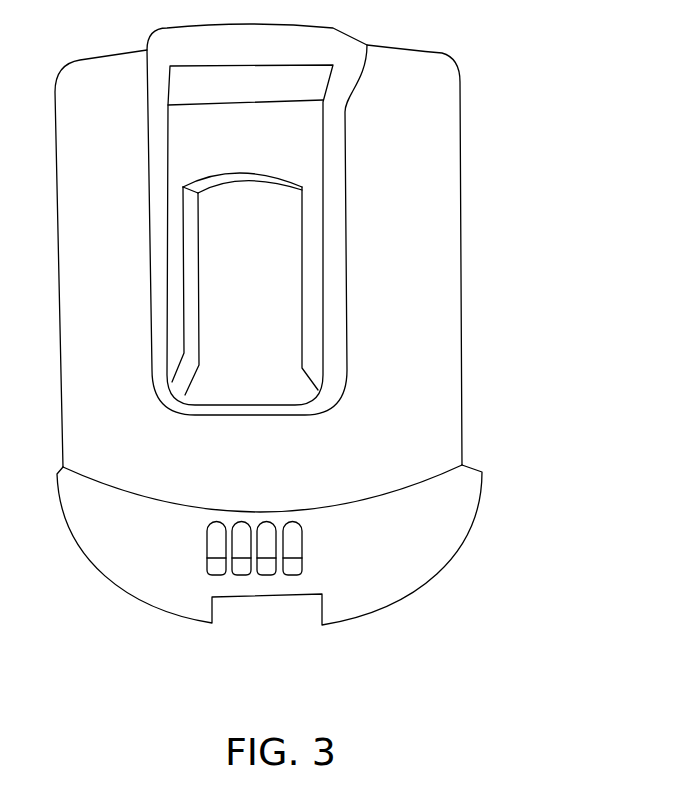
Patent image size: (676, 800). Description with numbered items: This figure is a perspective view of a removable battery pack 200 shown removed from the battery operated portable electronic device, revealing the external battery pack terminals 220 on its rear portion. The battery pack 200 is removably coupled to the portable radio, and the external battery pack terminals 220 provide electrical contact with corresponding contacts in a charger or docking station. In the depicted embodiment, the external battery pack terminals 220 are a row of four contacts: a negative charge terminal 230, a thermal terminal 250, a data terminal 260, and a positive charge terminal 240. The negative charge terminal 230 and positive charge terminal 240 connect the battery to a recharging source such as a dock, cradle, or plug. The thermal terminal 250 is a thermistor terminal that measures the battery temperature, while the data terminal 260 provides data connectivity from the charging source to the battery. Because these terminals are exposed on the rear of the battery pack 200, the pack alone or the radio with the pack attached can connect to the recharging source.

The removable battery pack 200 is at (581, 701).
The external battery pack terminals 220 is at (190, 574).
The negative charge (CH−) terminal 230 is at (207, 548).
The positive charge (CH+) terminal 240 is at (302, 546).
The thermal terminal 250 is at (240, 522).
The data terminal 260 is at (267, 522).